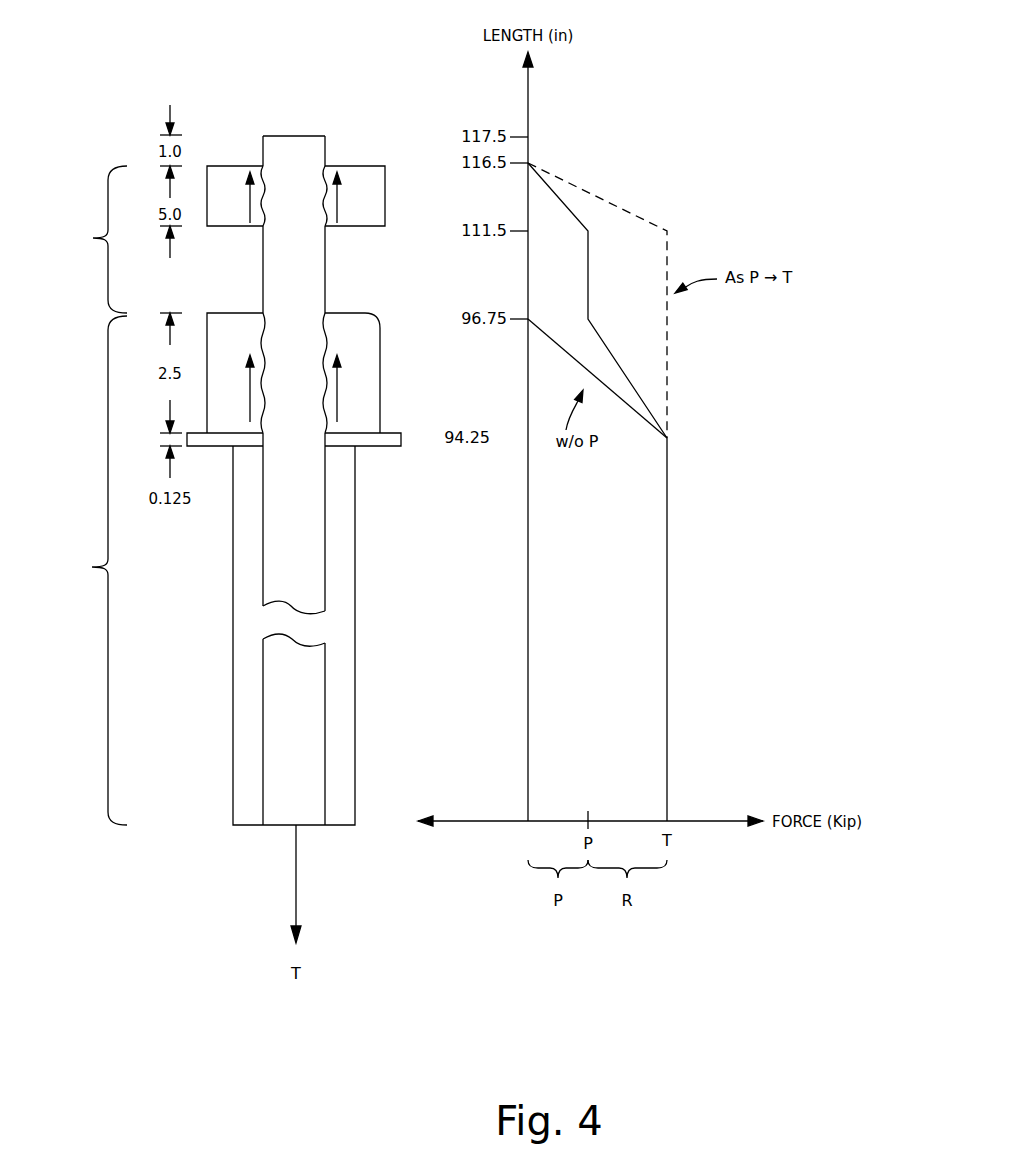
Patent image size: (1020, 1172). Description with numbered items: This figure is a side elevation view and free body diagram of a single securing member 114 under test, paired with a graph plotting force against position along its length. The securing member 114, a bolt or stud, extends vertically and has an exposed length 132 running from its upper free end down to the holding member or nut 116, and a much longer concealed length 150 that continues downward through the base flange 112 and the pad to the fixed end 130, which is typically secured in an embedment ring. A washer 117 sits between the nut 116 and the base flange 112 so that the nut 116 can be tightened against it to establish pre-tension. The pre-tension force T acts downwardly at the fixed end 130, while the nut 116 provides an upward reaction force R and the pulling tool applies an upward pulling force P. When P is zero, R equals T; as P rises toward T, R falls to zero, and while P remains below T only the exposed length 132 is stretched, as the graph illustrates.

The base flange 112 is at (367, 166).
The securing member 114 is at (297, 136).
The holding member 116 is at (380, 395).
The washer 117 is at (392, 433).
The fixed end 130 is at (280, 825).
The exposed length 132 is at (90, 239).
The concealed length 150 is at (90, 570).